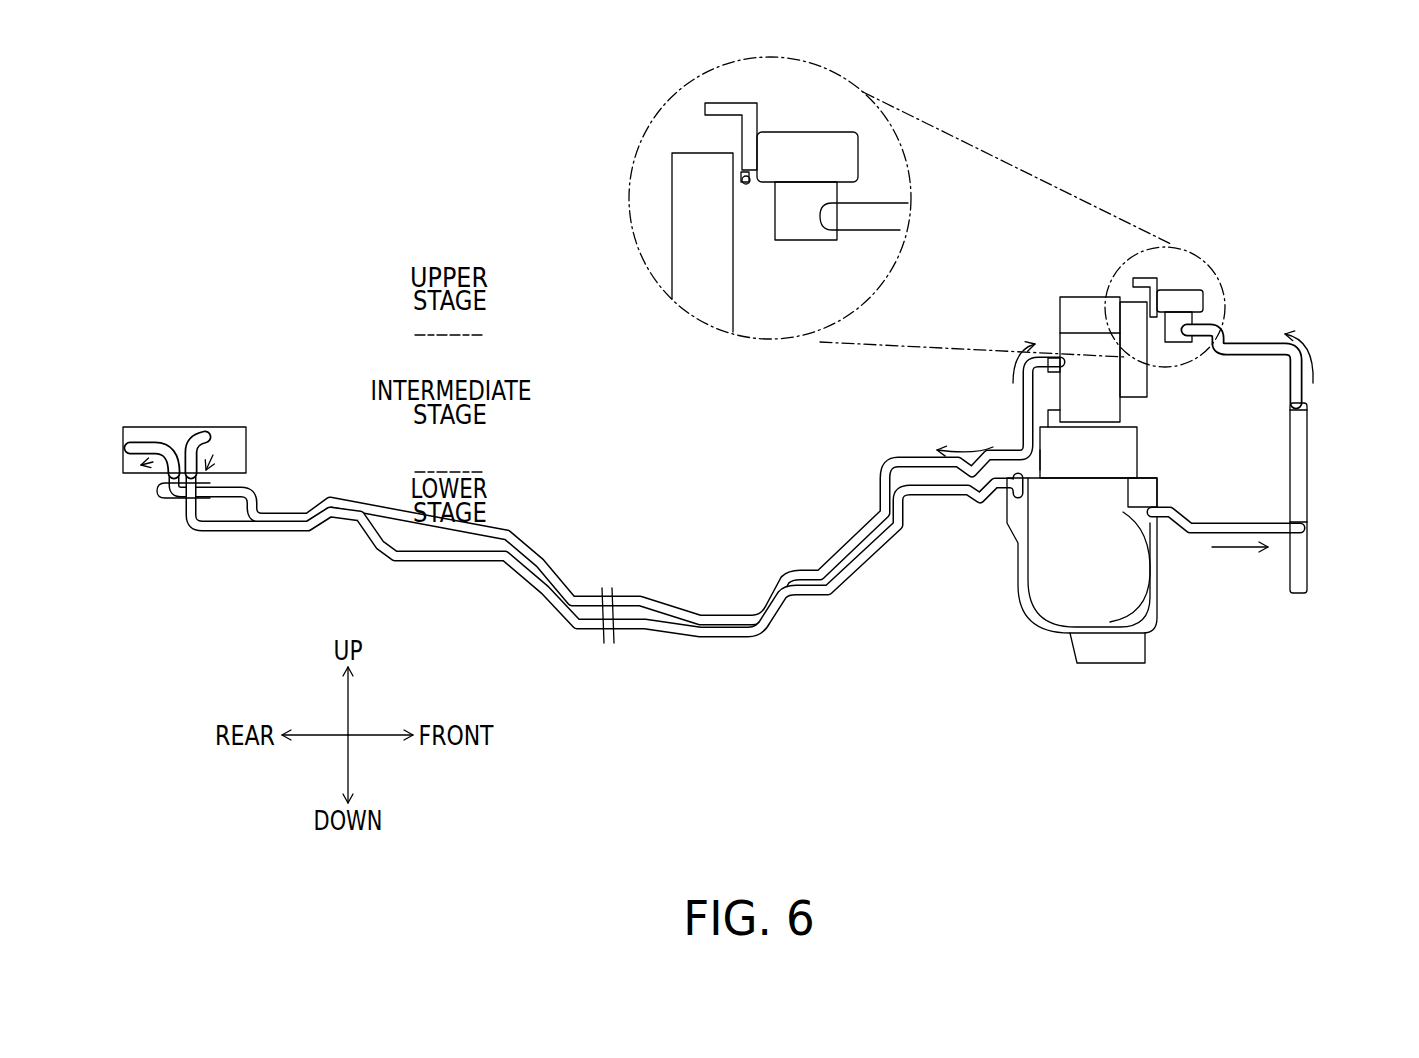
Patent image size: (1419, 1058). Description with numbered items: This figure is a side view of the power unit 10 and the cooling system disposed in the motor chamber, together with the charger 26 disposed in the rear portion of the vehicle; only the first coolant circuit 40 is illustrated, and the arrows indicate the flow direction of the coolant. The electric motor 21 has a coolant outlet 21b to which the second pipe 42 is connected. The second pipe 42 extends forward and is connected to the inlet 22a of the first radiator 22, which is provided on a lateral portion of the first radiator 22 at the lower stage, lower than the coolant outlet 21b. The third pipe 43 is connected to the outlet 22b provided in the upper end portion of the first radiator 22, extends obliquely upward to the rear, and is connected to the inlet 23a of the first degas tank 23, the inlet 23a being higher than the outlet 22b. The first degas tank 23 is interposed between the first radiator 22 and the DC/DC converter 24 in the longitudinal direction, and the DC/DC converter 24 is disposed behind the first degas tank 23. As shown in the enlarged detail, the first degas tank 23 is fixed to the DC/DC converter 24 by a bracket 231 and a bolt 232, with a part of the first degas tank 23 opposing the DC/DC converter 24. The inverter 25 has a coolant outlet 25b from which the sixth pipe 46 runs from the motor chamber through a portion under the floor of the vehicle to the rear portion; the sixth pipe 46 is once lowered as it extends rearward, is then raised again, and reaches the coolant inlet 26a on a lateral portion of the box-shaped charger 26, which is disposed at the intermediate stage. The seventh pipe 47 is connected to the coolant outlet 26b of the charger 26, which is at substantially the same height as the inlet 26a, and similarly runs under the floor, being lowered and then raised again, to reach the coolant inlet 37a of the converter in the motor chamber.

The power unit 10 is at (1002, 631).
The electric motor 21 is at (1157, 578).
The coolant outlet 21b is at (1123, 512).
The first radiator 22 is at (1297, 597).
The inlet 22a is at (1307, 522).
The outlet 22b is at (1307, 410).
The first degas tank 23 is at (1180, 290).
The inlet 23a is at (821, 212).
The DC/DC converter 24 is at (1147, 380).
The inverter 25 is at (1137, 437).
The coolant outlet 25b is at (1040, 460).
The charger 26 is at (207, 427).
The coolant inlet 26a is at (130, 427).
The coolant outlet 26b is at (212, 437).
The coolant inlet 37a is at (1057, 372).
The first coolant circuit 40 is at (713, 486).
The second pipe 42 is at (1253, 522).
The third pipe 43 is at (1255, 344).
The sixth pipe 46 is at (870, 527).
The seventh pipe 47 is at (877, 557).
The bracket 231 is at (728, 103).
The bolt 232 is at (745, 190).